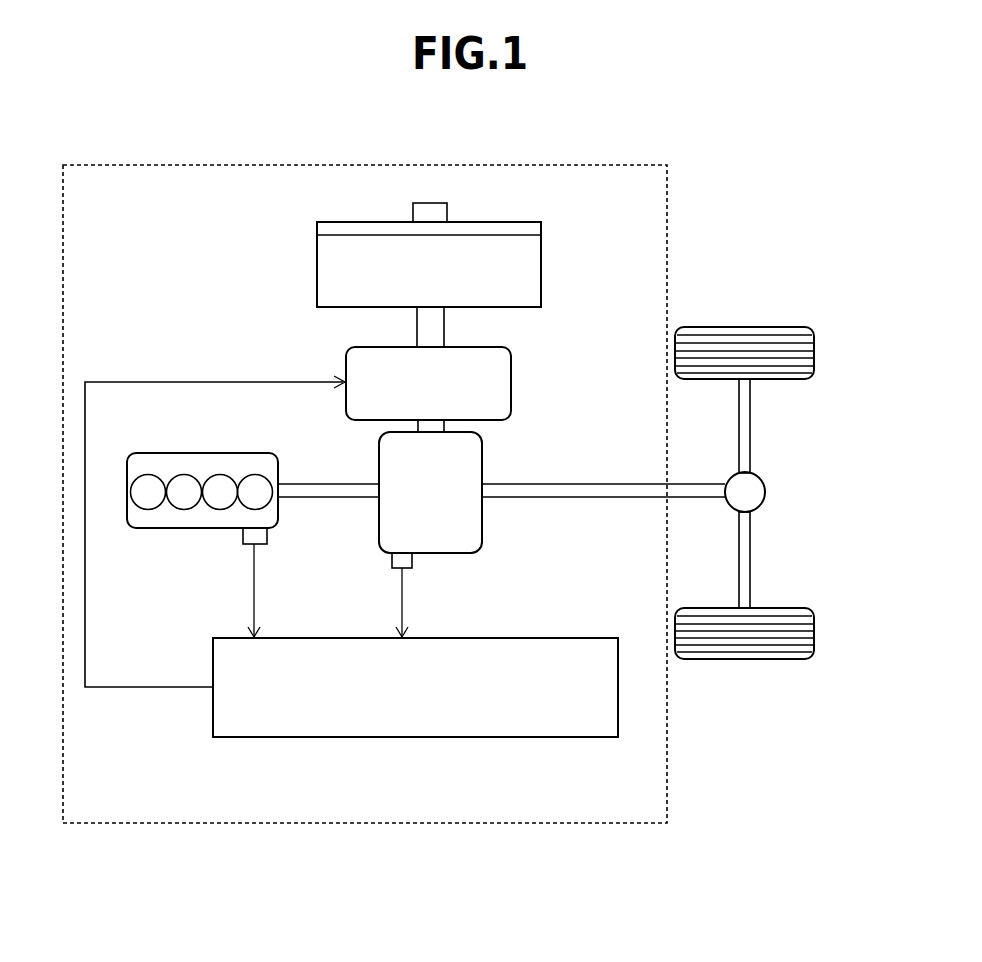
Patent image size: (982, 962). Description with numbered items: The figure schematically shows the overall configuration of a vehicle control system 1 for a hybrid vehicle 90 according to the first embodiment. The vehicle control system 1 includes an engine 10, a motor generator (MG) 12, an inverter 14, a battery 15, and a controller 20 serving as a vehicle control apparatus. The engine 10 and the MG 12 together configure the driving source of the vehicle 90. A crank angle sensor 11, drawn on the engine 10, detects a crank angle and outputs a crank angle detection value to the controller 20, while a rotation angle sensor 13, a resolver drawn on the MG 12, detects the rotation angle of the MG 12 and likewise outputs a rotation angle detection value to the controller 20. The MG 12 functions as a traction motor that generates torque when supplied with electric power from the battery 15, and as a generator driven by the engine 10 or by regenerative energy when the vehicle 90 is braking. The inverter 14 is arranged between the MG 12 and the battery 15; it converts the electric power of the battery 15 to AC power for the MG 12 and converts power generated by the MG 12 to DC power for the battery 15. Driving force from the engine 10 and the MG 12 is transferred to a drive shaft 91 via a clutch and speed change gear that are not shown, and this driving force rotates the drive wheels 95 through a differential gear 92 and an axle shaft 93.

The vehicle control system 1 is at (670, 190).
The engine 10 is at (164, 530).
The crank angle sensor 11 is at (261, 546).
The motor generator 12 is at (468, 555).
The rotation angle sensor 13 is at (390, 563).
The inverter 14 is at (512, 372).
The battery 15 is at (543, 261).
The controller 20 is at (261, 739).
The vehicle 90 is at (156, 868).
The drive shaft 91 is at (693, 483).
The differential gear 92 is at (766, 490).
The axle shaft 93 is at (751, 428).
The drive wheels 95 is at (815, 339).